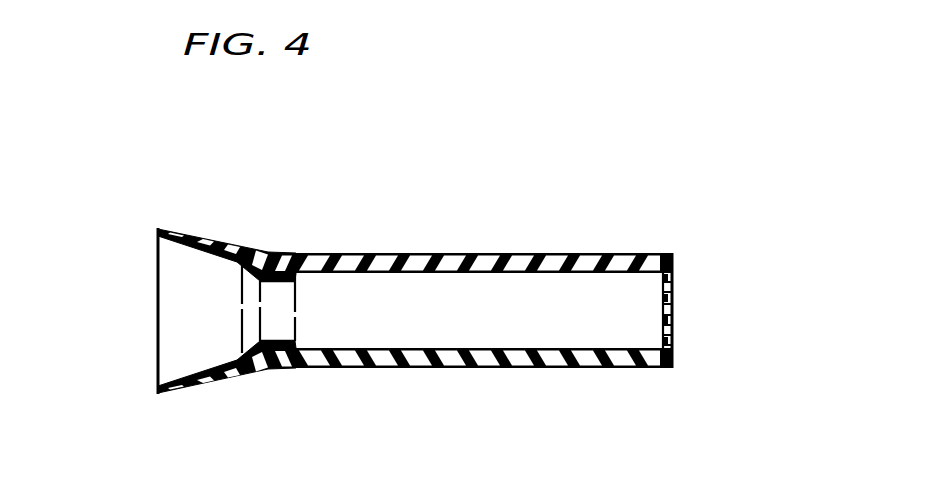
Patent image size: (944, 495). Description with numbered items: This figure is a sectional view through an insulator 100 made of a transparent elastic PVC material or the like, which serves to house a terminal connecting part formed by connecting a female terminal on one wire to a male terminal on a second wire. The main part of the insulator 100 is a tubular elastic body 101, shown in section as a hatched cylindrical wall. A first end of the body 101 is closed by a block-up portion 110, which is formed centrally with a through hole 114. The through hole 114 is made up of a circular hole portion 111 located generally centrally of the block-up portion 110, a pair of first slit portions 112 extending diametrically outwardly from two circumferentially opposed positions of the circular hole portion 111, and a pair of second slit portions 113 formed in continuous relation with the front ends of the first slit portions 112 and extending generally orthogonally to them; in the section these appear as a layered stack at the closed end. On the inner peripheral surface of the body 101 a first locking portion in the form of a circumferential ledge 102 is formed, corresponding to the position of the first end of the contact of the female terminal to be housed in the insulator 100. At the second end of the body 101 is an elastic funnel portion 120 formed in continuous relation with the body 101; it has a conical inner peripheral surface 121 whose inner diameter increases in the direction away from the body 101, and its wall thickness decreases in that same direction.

The insulator 100 is at (494, 194).
The tubular elastic body 101 is at (350, 250).
The circumferential ledge 102 is at (273, 270).
The block-up portion 110 is at (675, 347).
The circular hole portion 111 is at (675, 310).
The first slit portions 112 is at (675, 295).
The second slit portions 113 is at (675, 277).
The through hole 114 is at (764, 225).
The funnel portion 120 is at (197, 237).
The conical inner peripheral surface 121 is at (157, 257).